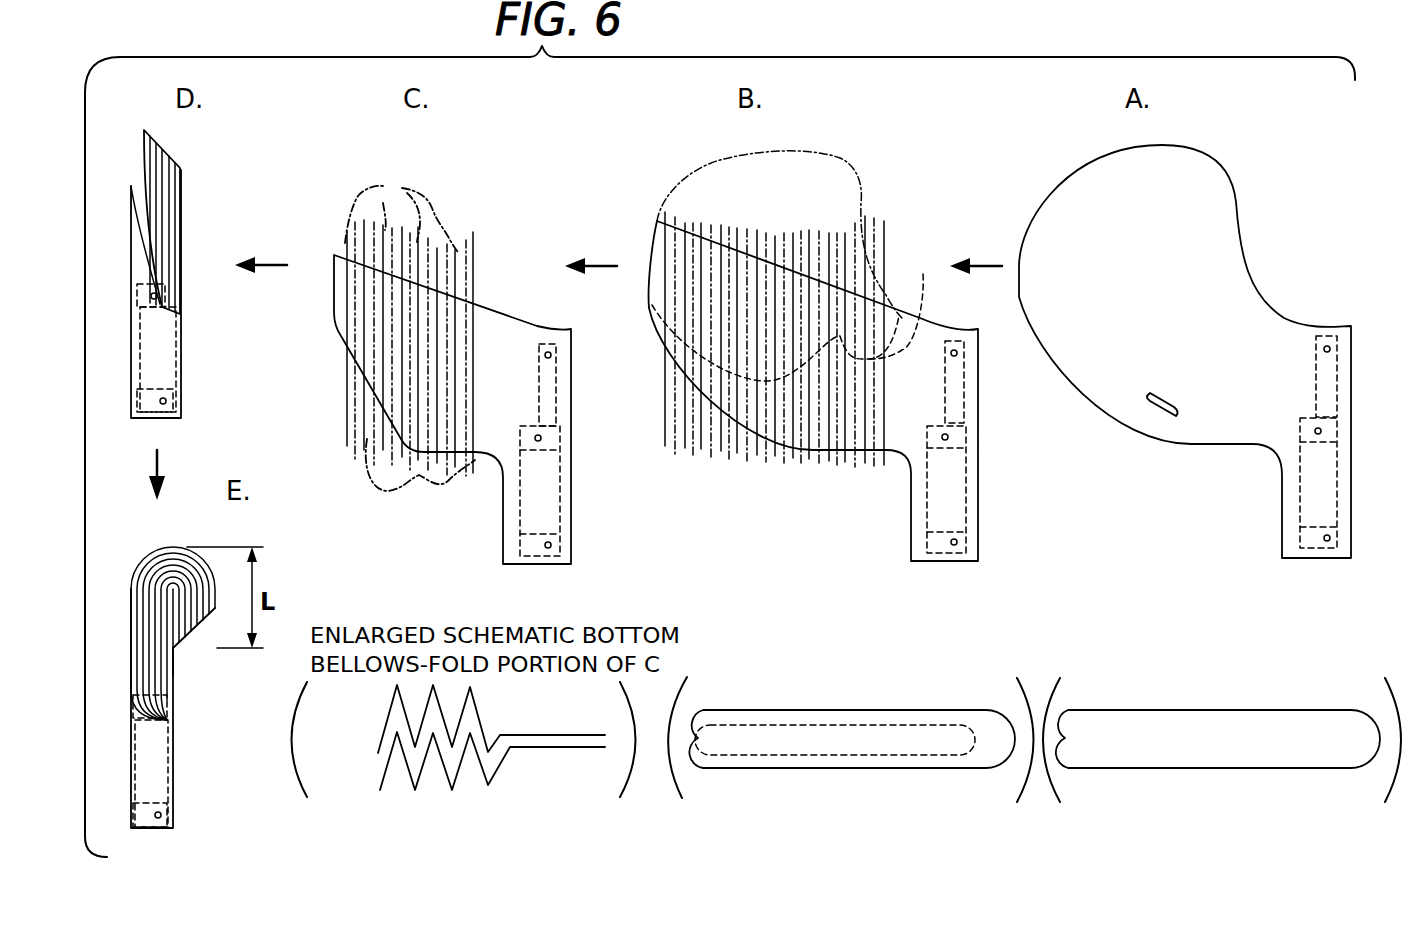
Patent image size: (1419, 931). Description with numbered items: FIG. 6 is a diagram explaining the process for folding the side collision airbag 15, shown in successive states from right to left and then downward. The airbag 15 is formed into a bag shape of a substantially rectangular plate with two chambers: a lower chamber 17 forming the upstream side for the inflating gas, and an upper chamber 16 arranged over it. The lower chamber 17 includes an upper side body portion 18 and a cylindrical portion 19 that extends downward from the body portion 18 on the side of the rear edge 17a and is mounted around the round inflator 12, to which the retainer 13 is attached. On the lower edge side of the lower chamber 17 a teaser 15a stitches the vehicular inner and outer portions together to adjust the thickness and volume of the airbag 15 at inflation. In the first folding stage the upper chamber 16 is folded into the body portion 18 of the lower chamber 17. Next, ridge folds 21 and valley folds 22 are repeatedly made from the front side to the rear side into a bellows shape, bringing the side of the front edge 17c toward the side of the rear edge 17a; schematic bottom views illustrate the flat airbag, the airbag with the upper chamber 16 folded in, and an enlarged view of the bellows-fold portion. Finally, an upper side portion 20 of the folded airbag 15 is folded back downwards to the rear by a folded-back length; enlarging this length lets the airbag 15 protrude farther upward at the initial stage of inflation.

The inflator 12 is at (1305, 489).
The retainer 13 is at (1348, 356).
The side collision airbag 15 is at (1272, 225).
The teaser 15a is at (1178, 416).
The upper chamber 16 is at (1068, 189).
The lower chamber 17 is at (1217, 292).
The rear edge 17a is at (1353, 437).
The front edge 17c is at (1014, 295).
The body portion 18 is at (1133, 341).
The cylindrical portion 19 is at (1344, 499).
The upper side portion 20 is at (166, 147).
The ridge fold 21 is at (460, 815).
The valley fold 22 is at (503, 817).